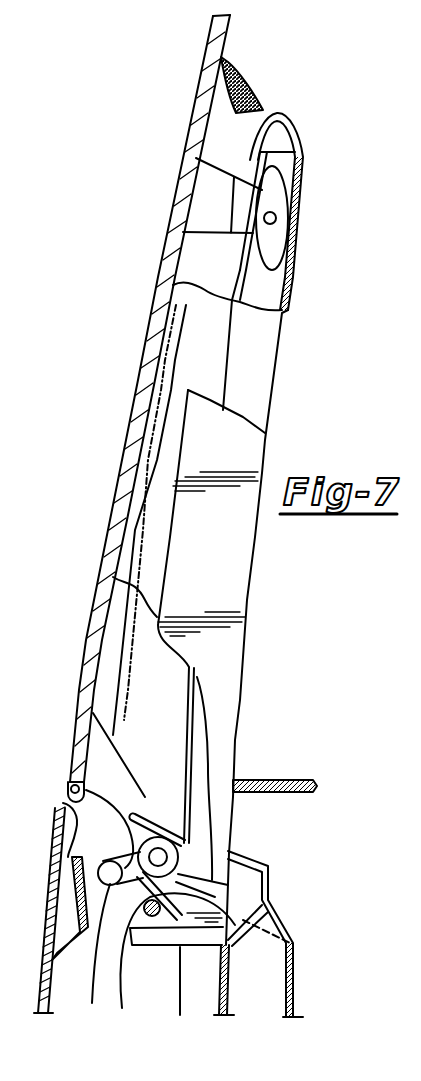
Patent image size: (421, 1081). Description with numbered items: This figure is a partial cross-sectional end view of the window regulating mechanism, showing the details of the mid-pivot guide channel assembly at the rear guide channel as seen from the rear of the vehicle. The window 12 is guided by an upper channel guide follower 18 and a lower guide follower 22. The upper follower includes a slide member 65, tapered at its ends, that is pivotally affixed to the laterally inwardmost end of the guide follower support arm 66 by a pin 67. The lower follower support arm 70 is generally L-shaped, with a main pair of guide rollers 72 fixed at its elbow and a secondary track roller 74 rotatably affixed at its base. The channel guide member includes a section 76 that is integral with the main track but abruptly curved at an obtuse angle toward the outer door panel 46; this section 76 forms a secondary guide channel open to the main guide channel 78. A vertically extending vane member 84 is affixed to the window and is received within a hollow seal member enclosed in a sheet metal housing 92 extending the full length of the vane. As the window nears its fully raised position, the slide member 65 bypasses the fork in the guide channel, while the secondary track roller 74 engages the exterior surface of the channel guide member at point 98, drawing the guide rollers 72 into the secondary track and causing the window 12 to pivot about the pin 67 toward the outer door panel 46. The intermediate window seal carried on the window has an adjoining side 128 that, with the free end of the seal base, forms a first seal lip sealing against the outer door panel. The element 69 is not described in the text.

The window 12 is at (108, 517).
The upper channel guide follower 18 is at (244, 160).
The lower guide follower 22 is at (150, 794).
The outer door panel 46 is at (59, 820).
The slide member 65 is at (275, 180).
The guide follower support arm 66 is at (225, 165).
The pin 67 is at (272, 222).
The wedge pad 69 is at (243, 78).
The lower guide follower support arm 70 is at (96, 742).
The guide rollers 72 is at (270, 884).
The secondary track roller 74 is at (297, 947).
The secondary guide channel section 76 is at (177, 965).
The main guide channel 78 is at (200, 1007).
The vane member 84 is at (187, 304).
The sheet metal housing 92 is at (284, 107).
The point of secondary track departure 98 is at (128, 935).
The adjoining side of intermediate seal 128 is at (95, 790).